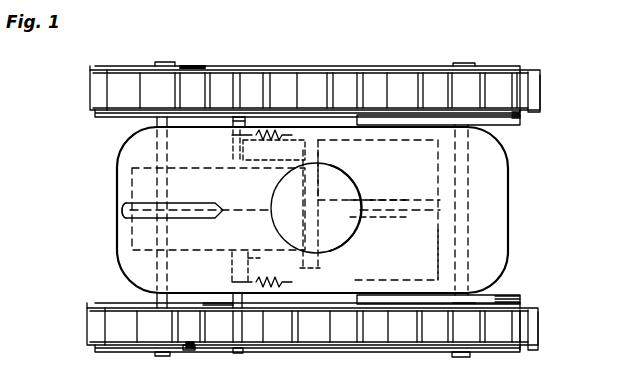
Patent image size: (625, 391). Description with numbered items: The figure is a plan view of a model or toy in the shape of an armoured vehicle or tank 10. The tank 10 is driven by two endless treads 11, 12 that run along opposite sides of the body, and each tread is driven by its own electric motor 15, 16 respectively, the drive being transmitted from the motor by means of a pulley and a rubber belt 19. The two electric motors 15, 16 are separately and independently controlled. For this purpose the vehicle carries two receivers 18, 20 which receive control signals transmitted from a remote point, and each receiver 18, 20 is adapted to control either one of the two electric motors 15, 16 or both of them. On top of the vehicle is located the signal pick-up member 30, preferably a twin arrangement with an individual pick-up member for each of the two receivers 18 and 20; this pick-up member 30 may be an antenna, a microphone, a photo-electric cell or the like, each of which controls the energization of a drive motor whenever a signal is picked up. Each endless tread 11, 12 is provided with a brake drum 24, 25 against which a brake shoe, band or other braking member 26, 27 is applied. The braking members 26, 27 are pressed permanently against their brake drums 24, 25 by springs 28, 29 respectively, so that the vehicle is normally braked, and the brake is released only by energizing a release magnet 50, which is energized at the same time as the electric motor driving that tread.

The tank 10 is at (516, 218).
The endless tread 11 is at (308, 338).
The endless tread 12 is at (314, 78).
The electric motor 15 is at (470, 238).
The electric motor 16 is at (470, 168).
The receiver 18 is at (132, 245).
The rubber belt 19 is at (522, 118).
The receiver 20 is at (132, 168).
The brake drum 24 is at (203, 70).
The brake drum 25 is at (188, 348).
The braking member 26 is at (241, 68).
The braking member 27 is at (237, 352).
The spring 28 is at (272, 132).
The spring 29 is at (280, 288).
The signal pick-up member 30 is at (351, 232).
The release magnet 50 is at (318, 278).